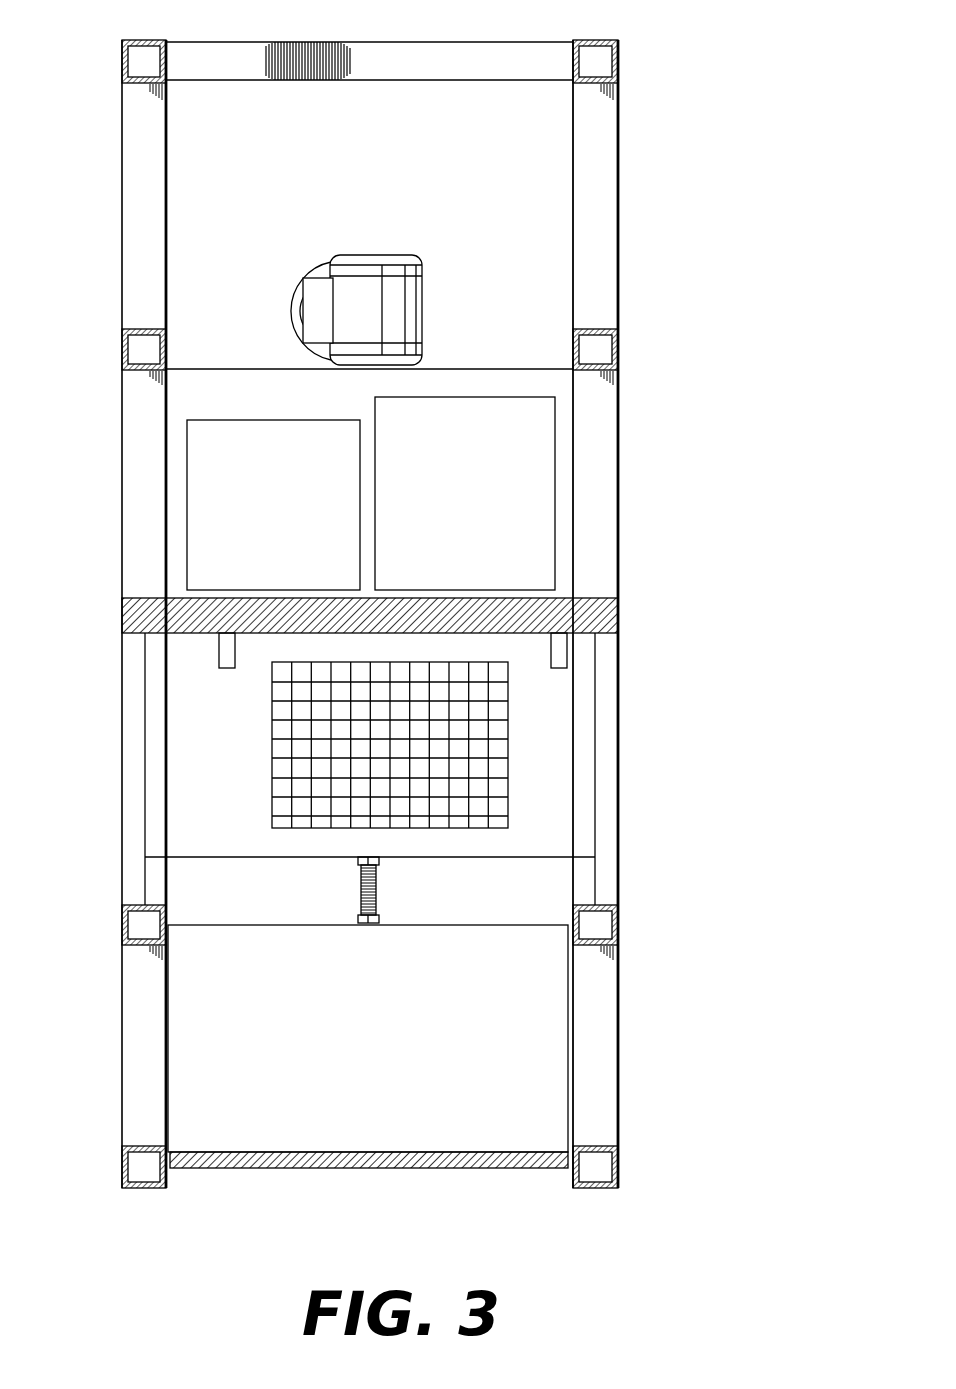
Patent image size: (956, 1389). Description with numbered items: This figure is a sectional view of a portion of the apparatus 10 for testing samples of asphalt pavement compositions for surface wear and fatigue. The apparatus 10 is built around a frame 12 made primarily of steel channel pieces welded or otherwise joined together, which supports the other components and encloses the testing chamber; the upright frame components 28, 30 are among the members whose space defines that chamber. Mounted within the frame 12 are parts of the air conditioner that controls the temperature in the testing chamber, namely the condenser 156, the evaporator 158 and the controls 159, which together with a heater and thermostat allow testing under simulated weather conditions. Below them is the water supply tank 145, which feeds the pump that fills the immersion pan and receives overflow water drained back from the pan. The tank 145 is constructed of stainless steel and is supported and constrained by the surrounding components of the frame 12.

The apparatus 10 is at (738, 107).
The frame 12 is at (617, 64).
The frame component 28 is at (619, 530).
The frame component 30 is at (133, 458).
The water supply tank 145 is at (350, 1062).
The condenser 156 is at (490, 508).
The evaporator 158 is at (510, 764).
The controls 159 is at (292, 522).